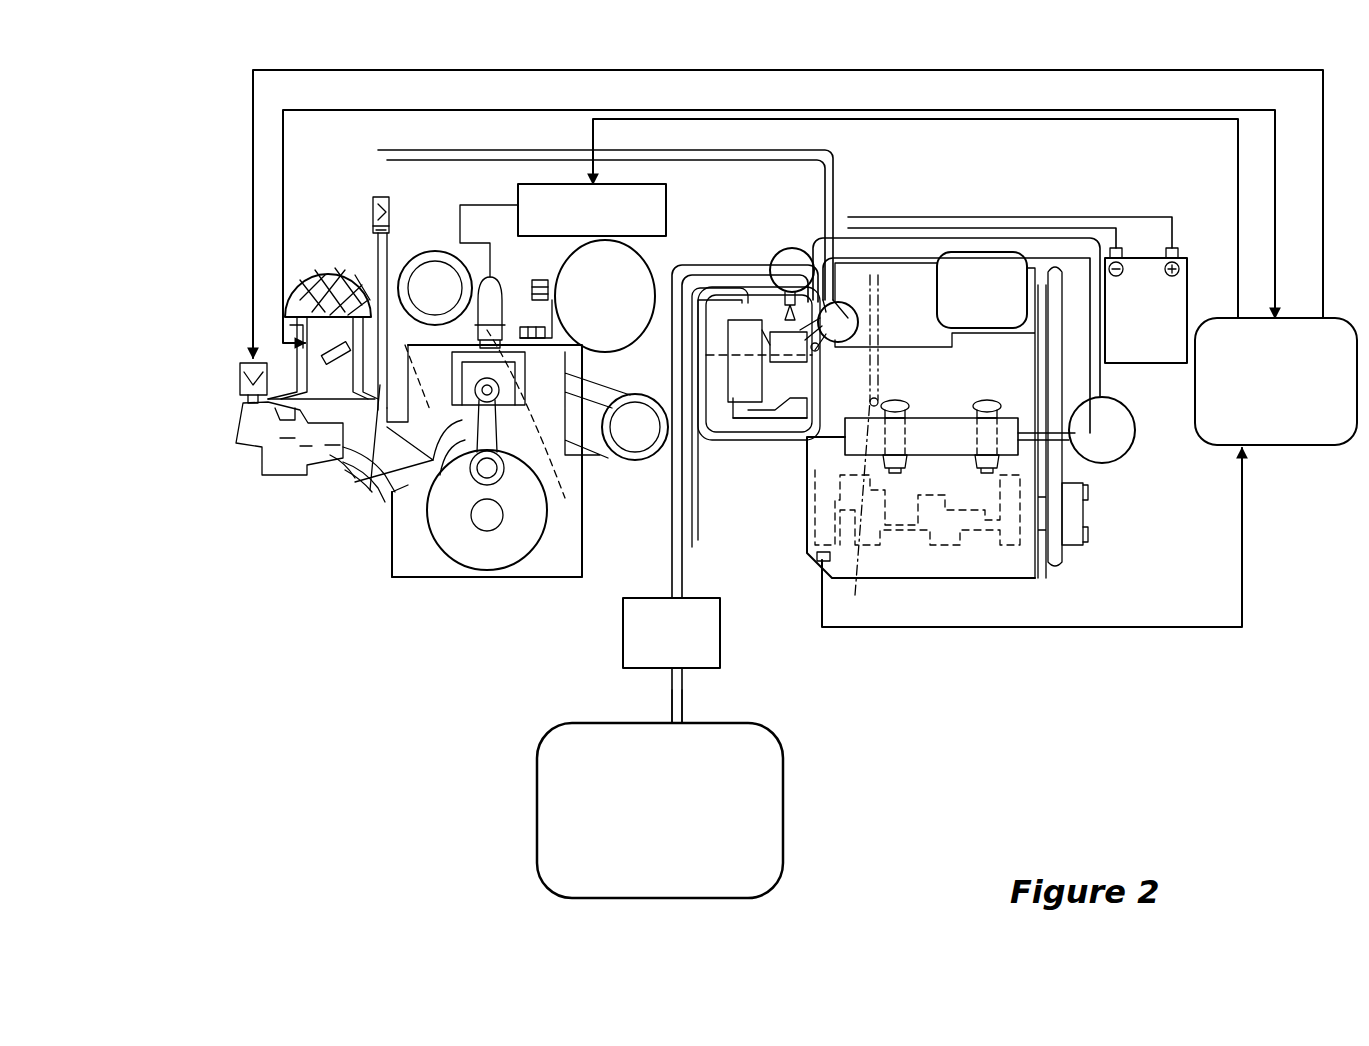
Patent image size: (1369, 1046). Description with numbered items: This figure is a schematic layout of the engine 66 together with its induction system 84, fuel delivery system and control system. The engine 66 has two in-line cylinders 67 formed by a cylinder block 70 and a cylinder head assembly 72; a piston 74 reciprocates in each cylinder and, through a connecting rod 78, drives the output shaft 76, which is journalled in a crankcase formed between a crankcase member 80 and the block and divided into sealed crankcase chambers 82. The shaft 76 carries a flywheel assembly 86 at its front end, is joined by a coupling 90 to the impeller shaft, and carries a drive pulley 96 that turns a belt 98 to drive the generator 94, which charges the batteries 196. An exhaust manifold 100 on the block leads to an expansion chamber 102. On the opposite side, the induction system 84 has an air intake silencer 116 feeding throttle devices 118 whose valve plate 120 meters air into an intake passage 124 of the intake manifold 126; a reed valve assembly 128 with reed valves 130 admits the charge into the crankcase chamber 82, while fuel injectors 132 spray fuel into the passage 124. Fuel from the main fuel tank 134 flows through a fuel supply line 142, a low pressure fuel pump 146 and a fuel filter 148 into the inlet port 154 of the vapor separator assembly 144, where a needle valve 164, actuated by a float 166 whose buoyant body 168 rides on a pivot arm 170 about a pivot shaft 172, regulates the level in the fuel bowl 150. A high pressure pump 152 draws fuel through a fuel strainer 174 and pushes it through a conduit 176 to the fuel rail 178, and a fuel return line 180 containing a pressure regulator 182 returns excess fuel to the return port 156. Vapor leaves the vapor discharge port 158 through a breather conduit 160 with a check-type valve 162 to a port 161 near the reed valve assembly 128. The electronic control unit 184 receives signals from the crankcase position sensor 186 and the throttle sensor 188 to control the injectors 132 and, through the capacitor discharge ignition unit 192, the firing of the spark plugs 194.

The engine 66 is at (382, 604).
The cylinders 67 is at (436, 342).
The cylinder block 70 is at (396, 330).
The cylinder head assembly 72 is at (525, 325).
The piston 74 is at (457, 358).
The output shaft 76 is at (485, 525).
The connecting rod 78 is at (495, 436).
The crankcase member 80 is at (557, 578).
The crankcase chambers 82 is at (412, 578).
The induction system 84 is at (224, 533).
The flywheel assembly 86 is at (815, 495).
The coupling 90 is at (1097, 517).
The generator 94 is at (437, 248).
The drive pulley 96 is at (508, 553).
The belt 98 is at (540, 480).
The exhaust manifold 100 is at (632, 460).
The expansion chamber 102 is at (602, 330).
The air intake silencer 116 is at (318, 260).
The throttle devices 118 is at (300, 343).
The valve plate 120 is at (338, 343).
The intake passage 124 is at (362, 485).
The intake manifold 126 is at (350, 482).
The reed valve assembly 128 is at (452, 466).
The reed valves 130 is at (413, 497).
The fuel injectors 132 is at (255, 432).
The main fuel tank 134 is at (528, 784).
The fuel supply line 142 is at (672, 700).
The vapor separator assembly 144 is at (716, 452).
The low pressure fuel pump 146 is at (793, 250).
The fuel filter 148 is at (647, 613).
The fuel bowl 150 is at (862, 272).
The high pressure pump 152 is at (684, 580).
The inlet port 154 is at (797, 258).
The return port 156 is at (857, 323).
The vapor discharge port 158 is at (838, 302).
The breather conduit 160 is at (400, 150).
The port 161 is at (332, 467).
The check-type valve 162 is at (373, 200).
The needle valve 164 is at (825, 258).
The float 166 is at (768, 312).
The buoyant body 168 is at (783, 435).
The pivot arm 170 is at (820, 355).
The pivot shaft 172 is at (820, 345).
The fuel strainer 174 is at (777, 450).
The conduit 176 is at (720, 417).
The fuel rail 178 is at (933, 443).
The fuel return line 180 is at (236, 365).
The pressure regulator 182 is at (1130, 453).
The electronic control unit 184 is at (1297, 447).
The crankcase position sensor 186 is at (815, 565).
The sensor 188 is at (283, 333).
The capacitor discharge ignition unit 192 is at (683, 182).
The spark plugs 194 is at (490, 262).
The batteries 196 is at (1172, 300).